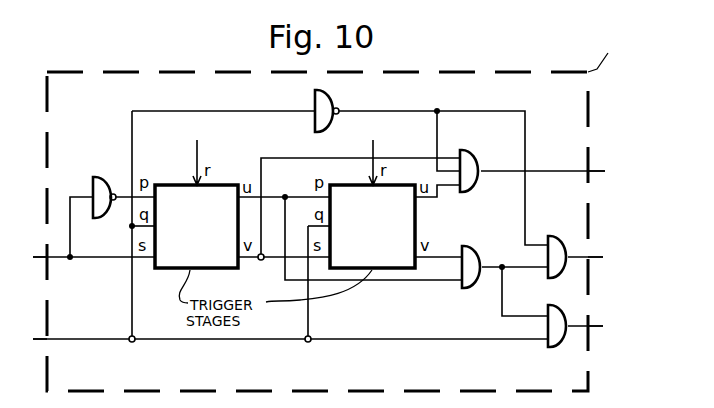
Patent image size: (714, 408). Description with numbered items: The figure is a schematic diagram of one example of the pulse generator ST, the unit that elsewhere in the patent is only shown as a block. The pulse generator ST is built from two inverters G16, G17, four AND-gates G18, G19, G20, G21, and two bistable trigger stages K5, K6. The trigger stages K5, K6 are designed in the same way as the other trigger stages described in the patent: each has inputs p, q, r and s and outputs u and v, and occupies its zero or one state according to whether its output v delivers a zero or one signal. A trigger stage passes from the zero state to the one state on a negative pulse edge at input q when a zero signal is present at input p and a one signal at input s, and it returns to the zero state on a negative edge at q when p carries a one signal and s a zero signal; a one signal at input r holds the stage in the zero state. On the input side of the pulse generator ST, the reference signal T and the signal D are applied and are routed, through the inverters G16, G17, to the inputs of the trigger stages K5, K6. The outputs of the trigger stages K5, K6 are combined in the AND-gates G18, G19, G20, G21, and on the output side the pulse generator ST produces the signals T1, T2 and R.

The pulse generator ST is at (462, 72).
The inverter G16 is at (95, 178).
The inverter G17 is at (328, 94).
The AND-gate G18 is at (468, 160).
The AND-gate G19 is at (468, 256).
The AND-gate G20 is at (556, 246).
The AND-gate G21 is at (556, 339).
The trigger stage K5 is at (196, 226).
The trigger stage K6 is at (372, 226).
The reference signal T is at (30, 257).
The signal D is at (32, 340).
The signal T1 is at (608, 257).
The signal T2 is at (609, 171).
The signal R is at (604, 326).